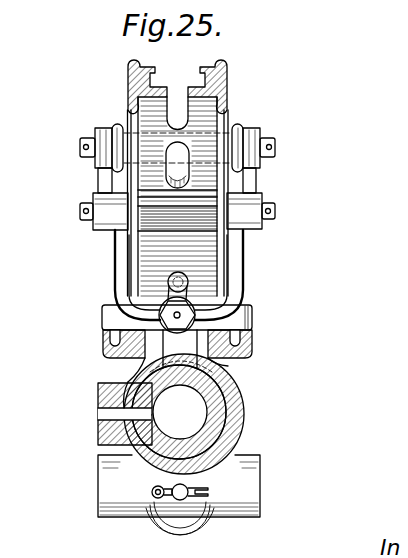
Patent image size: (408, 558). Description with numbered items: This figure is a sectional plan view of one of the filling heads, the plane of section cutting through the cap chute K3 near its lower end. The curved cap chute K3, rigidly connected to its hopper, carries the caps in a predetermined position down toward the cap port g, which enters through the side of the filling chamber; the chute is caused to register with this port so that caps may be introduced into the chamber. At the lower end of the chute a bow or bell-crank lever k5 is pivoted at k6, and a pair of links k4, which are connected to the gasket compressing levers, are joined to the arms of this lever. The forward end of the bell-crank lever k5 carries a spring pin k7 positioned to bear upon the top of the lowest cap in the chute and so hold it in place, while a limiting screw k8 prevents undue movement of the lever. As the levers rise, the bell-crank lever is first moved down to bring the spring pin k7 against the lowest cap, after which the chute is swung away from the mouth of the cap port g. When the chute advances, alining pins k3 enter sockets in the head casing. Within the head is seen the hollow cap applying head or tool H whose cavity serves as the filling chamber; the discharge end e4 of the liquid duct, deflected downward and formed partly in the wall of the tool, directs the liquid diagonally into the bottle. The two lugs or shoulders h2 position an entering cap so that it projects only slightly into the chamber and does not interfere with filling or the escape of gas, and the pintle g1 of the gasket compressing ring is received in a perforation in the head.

The cap chute K3 is at (197, 246).
The links k4 is at (250, 112).
The bow or bell-crank lever k5 is at (258, 250).
The pivot k6 is at (274, 208).
The alining pins k3 is at (268, 333).
The spring pin k7 is at (180, 314).
The screw k8 is at (199, 272).
The cap port g is at (230, 356).
The cap applying head or tool H is at (242, 406).
The lugs or shoulders h2 is at (204, 392).
The discharge end of the duct e4 is at (128, 382).
The pintle g1 is at (173, 499).